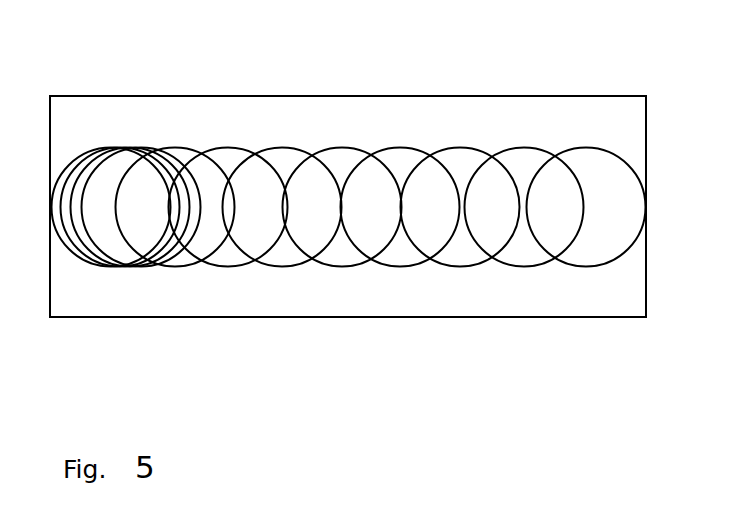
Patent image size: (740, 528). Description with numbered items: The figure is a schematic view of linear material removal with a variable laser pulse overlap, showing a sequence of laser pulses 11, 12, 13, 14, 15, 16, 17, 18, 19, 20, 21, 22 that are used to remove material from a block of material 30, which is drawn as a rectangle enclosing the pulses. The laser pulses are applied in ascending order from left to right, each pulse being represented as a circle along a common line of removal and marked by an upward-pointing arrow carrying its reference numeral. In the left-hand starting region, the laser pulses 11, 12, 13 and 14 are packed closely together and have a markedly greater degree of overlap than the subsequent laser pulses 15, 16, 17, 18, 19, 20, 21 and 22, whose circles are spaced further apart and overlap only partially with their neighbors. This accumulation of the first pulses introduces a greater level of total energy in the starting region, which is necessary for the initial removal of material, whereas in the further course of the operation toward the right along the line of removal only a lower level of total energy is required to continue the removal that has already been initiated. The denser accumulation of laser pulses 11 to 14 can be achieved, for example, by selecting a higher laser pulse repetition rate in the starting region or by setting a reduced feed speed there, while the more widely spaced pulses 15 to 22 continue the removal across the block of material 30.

The block of material 30 is at (477, 127).
The laser pulse 11 is at (102, 273).
The laser pulse 12 is at (115, 273).
The laser pulse 13 is at (127, 273).
The laser pulse 14 is at (138, 273).
The laser pulse 15 is at (177, 273).
The laser pulse 16 is at (231, 273).
The laser pulse 17 is at (285, 273).
The laser pulse 18 is at (348, 273).
The laser pulse 19 is at (403, 273).
The laser pulse 20 is at (467, 273).
The laser pulse 21 is at (528, 273).
The laser pulse 22 is at (583, 273).